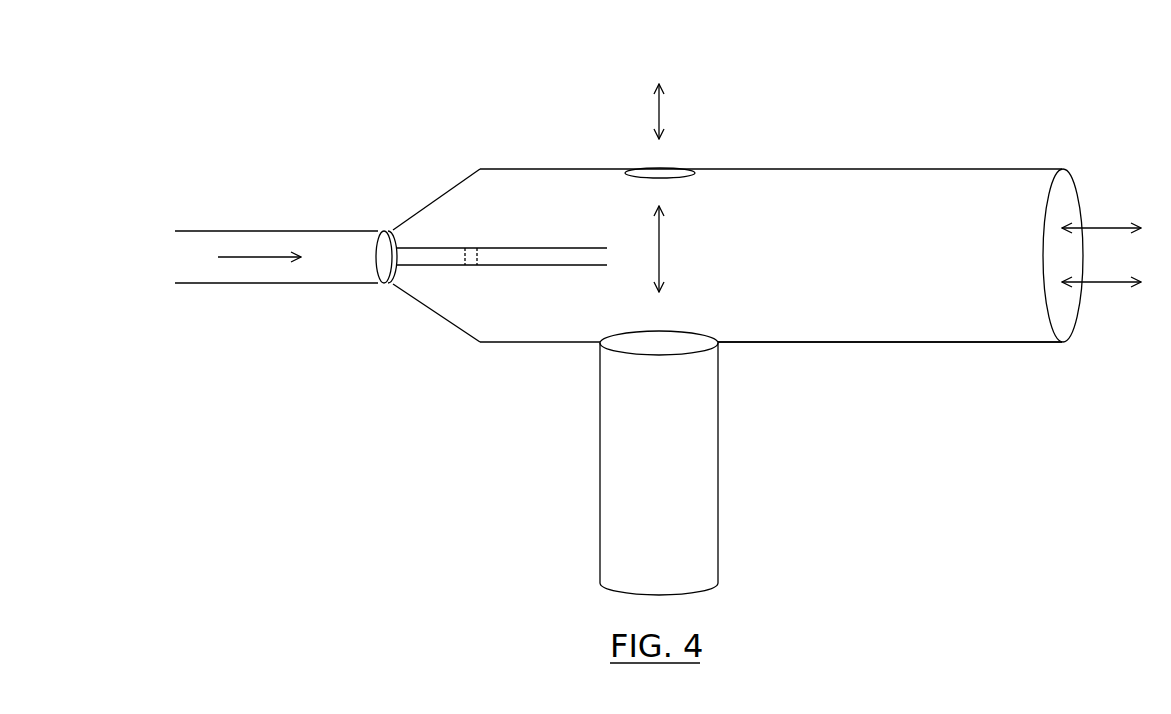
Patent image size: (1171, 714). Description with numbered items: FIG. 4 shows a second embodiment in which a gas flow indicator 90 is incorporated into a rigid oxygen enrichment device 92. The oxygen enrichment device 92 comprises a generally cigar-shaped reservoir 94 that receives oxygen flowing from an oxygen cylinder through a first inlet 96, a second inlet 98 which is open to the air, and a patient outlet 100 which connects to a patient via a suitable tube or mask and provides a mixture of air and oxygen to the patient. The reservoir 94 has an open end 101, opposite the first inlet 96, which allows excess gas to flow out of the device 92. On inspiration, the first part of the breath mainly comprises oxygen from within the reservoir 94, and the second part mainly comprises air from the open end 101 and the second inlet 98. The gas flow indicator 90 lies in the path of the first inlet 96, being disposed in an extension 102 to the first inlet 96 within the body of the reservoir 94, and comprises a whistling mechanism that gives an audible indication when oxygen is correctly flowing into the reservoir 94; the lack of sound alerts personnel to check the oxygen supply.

The gas flow indicator 90 is at (463, 232).
The oxygen enrichment device 92 is at (930, 128).
The reservoir 94 is at (888, 343).
The first inlet 96 is at (280, 284).
The second inlet 98 is at (678, 156).
The patient outlet 100 is at (600, 459).
The open end 101 is at (1100, 182).
The extension 102 is at (424, 266).